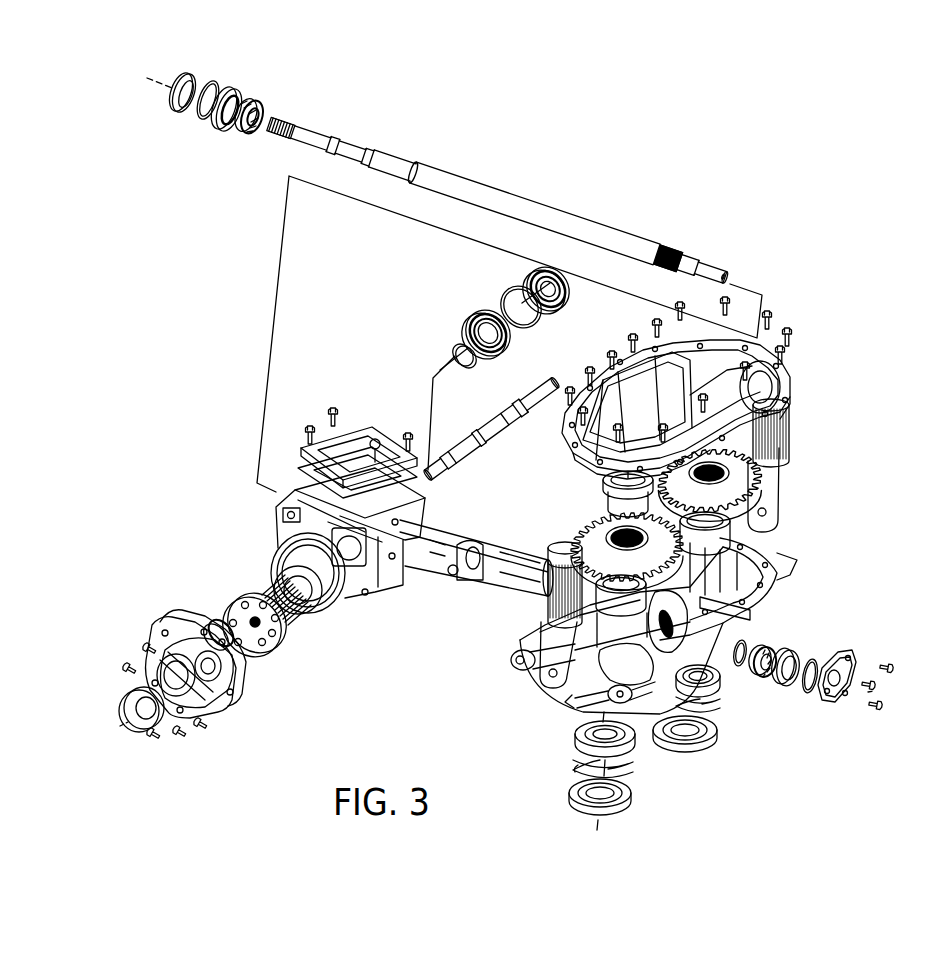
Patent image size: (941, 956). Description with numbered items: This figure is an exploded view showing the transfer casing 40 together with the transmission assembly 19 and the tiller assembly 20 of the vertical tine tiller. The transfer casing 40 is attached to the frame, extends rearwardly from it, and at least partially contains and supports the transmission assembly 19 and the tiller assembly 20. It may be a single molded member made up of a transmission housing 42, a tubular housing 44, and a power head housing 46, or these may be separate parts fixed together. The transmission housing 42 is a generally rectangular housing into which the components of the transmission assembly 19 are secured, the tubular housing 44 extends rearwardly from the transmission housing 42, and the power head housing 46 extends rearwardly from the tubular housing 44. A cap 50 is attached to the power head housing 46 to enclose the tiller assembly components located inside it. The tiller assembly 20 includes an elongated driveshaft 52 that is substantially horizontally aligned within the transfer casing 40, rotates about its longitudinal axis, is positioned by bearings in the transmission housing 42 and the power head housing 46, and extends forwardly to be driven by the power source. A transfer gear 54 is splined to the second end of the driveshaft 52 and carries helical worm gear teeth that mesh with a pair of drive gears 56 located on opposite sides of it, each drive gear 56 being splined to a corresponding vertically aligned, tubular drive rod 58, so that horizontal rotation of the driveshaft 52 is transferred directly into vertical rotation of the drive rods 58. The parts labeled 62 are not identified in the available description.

The transmission assembly 19 is at (259, 676).
The tiller assembly 20 is at (863, 494).
The transfer casing 40 is at (444, 513).
The transmission housing 42 is at (372, 590).
The tubular housing 44 is at (502, 585).
The power head housing 46 is at (757, 623).
The cap 50 is at (758, 387).
The driveshaft 52 is at (540, 217).
The transfer gear 54 is at (717, 687).
The drive gears 56 is at (743, 475).
The drive rods 58 is at (547, 670).
The bearing set 62 is at (227, 142).